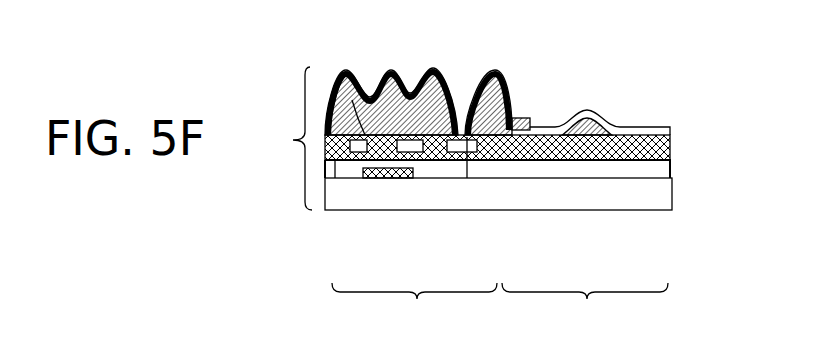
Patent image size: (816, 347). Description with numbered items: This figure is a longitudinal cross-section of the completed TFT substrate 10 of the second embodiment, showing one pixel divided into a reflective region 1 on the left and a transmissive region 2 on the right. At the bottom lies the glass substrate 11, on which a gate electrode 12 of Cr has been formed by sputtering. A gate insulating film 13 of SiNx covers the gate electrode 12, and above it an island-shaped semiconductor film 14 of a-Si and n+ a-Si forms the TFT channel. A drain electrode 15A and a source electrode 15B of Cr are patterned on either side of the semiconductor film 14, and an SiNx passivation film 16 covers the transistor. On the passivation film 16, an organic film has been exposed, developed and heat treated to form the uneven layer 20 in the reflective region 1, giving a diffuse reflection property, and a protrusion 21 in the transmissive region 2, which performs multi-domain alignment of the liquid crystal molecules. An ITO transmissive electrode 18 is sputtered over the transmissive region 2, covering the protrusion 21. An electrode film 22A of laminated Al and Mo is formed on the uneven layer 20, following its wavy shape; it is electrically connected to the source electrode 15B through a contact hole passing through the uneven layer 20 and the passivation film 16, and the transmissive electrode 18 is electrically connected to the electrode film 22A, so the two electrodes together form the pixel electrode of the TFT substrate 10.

The reflective region 1 is at (414, 309).
The transmissive region 2 is at (585, 309).
The TFT substrate 10 is at (287, 138).
The glass substrate 11 is at (522, 197).
The gate electrode 12 is at (388, 178).
The gate insulating film 13 is at (522, 160).
The semiconductor film 14 is at (344, 73).
The drain electrode 15A is at (335, 178).
The source electrode 15B is at (467, 178).
The passivation film 16 is at (522, 140).
The transmissive electrode 18 is at (606, 97).
The uneven layer 20 is at (391, 77).
The protrusion 21 is at (593, 92).
The electrode film 22A is at (486, 77).